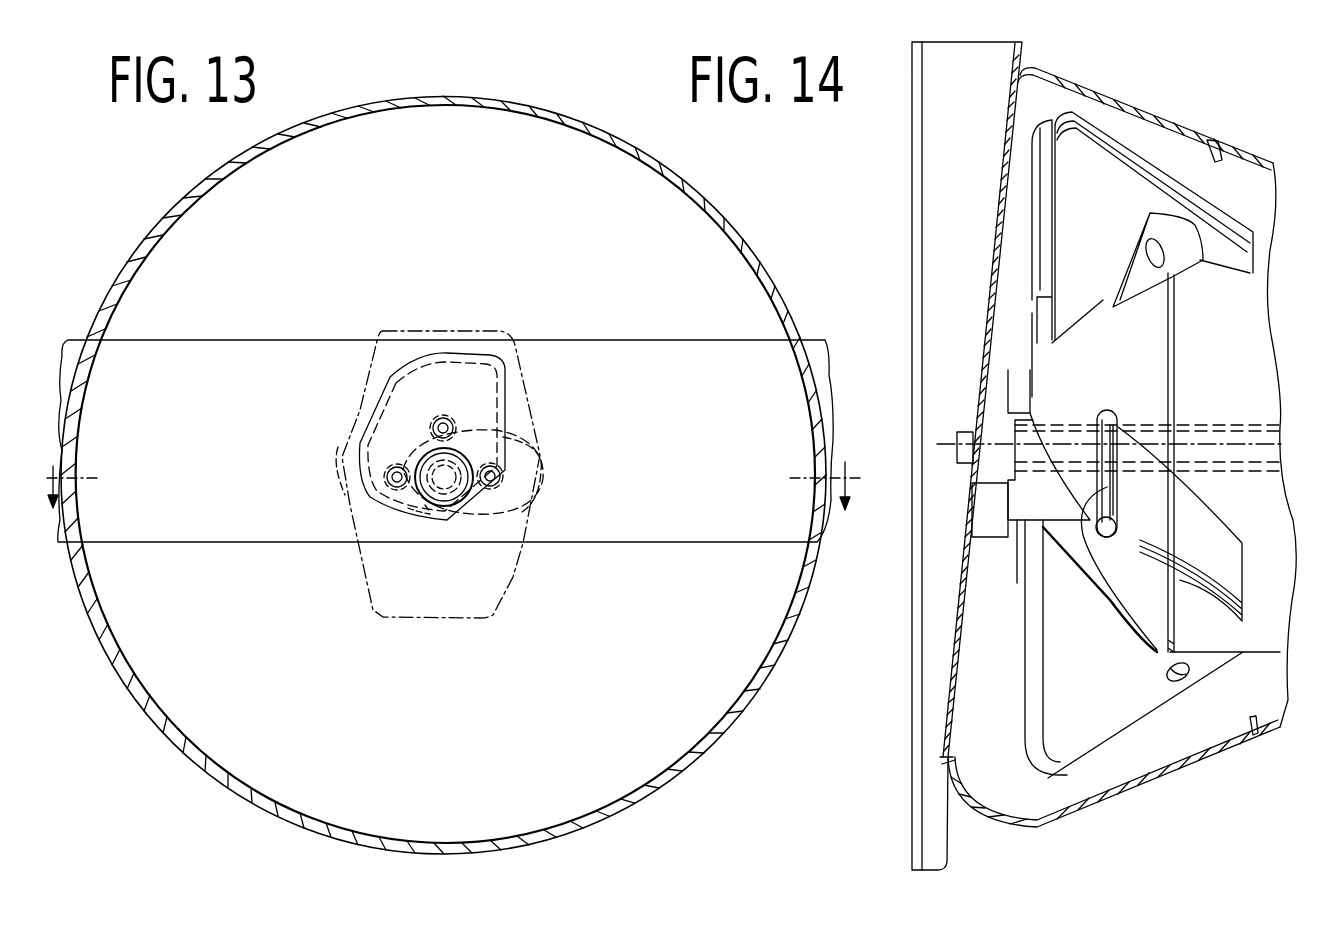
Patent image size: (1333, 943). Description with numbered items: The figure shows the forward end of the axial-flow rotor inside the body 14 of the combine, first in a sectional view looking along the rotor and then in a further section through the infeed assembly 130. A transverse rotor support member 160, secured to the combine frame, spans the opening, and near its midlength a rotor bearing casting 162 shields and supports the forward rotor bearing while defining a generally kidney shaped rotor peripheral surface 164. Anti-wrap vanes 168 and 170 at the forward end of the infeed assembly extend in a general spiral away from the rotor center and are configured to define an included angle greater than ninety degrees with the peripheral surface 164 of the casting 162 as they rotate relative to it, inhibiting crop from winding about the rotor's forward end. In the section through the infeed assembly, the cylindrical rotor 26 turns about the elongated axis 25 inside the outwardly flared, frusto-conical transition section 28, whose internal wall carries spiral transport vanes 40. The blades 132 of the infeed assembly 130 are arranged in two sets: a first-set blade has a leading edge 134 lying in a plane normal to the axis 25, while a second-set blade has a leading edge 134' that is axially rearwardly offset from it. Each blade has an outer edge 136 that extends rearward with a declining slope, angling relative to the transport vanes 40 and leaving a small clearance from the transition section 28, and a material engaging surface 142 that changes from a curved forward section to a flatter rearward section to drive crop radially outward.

In FIG. 13, the body 14 is at (459, 481).
In FIG. 14, the elongated axis 25 is at (944, 437).
In FIG. 14, the rotor 26 is at (1243, 403).
In FIG. 13, the transition section 28 is at (728, 220).
In FIG. 14, the transition section 28 is at (1128, 104).
In FIG. 14, the spiral transport vanes 40 is at (1224, 148).
In FIG. 14, the infeed assembly 130 is at (978, 152).
In FIG. 14, the blades 132 is at (1153, 148).
In FIG. 14, the leading edge 134 is at (1076, 447).
In FIG. 14, the leading edge 134' is at (1123, 530).
In FIG. 14, the outer edge 136 is at (1238, 222).
In FIG. 14, the material engaging surface 142 is at (1227, 580).
In FIG. 13, the transverse rotor support member 160 is at (272, 340).
In FIG. 14, the transverse rotor support member 160 is at (913, 212).
In FIG. 13, the rotor bearing casting 162 is at (505, 412).
In FIG. 14, the rotor bearing casting 162 is at (993, 506).
In FIG. 13, the rotor peripheral surface 164 is at (375, 398).
In FIG. 14, the rotor peripheral surface 164 is at (990, 540).
In FIG. 13, the anti-wrap vane 168 is at (540, 458).
In FIG. 13, the anti-wrap vane 170 is at (343, 493).